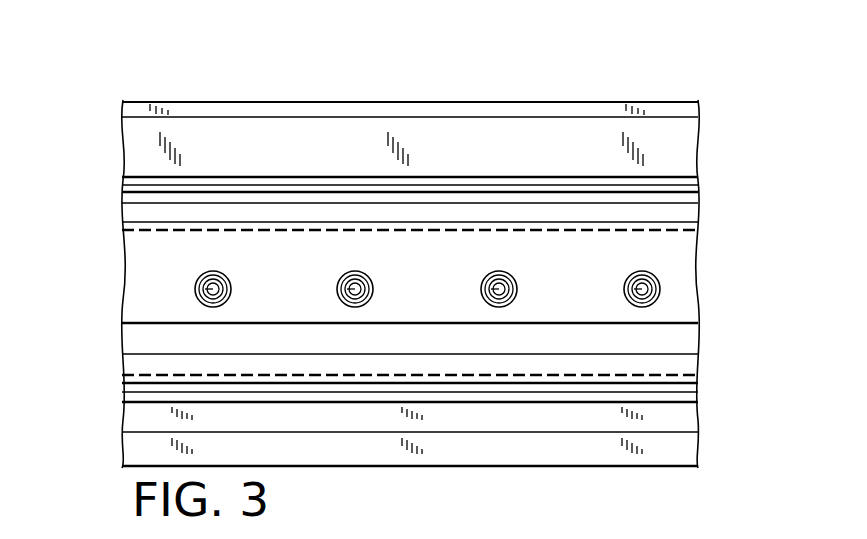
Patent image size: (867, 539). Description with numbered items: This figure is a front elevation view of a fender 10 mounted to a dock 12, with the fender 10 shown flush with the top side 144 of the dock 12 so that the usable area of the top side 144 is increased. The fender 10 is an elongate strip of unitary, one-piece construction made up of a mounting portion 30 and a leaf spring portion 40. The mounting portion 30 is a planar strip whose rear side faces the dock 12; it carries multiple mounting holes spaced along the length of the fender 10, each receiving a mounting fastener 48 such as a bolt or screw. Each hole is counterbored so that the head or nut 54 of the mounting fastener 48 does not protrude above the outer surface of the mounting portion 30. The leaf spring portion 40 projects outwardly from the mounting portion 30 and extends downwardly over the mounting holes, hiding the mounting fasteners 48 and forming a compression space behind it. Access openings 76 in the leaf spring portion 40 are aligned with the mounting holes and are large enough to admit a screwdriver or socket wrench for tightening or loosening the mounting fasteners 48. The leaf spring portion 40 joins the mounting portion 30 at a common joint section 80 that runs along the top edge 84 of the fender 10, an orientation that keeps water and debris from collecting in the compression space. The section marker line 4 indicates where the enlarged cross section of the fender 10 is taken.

The fender 10 is at (120, 299).
The dock 12 is at (131, 72).
The top side 144 is at (178, 103).
The top edge 84 is at (673, 180).
The joint section 80 is at (680, 202).
The leaf spring portion 40 is at (673, 273).
The mounting portion 30 is at (676, 412).
The mounting fastener 48 is at (336, 292).
The access openings 76 is at (488, 272).
The head or nut 54 is at (486, 300).
The line 4- 4 is at (525, 87).